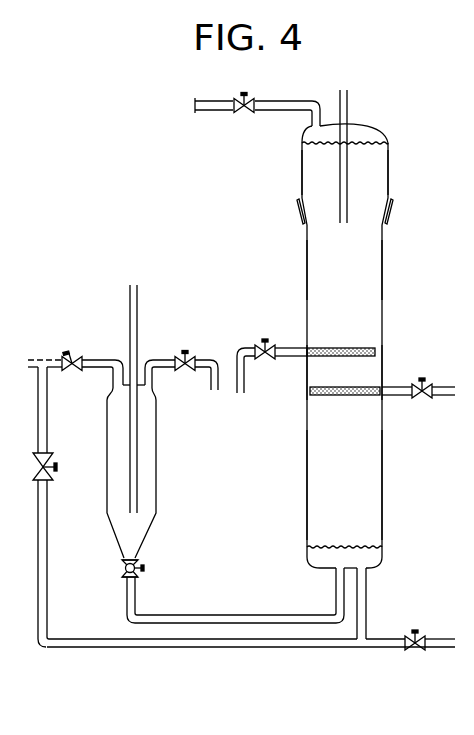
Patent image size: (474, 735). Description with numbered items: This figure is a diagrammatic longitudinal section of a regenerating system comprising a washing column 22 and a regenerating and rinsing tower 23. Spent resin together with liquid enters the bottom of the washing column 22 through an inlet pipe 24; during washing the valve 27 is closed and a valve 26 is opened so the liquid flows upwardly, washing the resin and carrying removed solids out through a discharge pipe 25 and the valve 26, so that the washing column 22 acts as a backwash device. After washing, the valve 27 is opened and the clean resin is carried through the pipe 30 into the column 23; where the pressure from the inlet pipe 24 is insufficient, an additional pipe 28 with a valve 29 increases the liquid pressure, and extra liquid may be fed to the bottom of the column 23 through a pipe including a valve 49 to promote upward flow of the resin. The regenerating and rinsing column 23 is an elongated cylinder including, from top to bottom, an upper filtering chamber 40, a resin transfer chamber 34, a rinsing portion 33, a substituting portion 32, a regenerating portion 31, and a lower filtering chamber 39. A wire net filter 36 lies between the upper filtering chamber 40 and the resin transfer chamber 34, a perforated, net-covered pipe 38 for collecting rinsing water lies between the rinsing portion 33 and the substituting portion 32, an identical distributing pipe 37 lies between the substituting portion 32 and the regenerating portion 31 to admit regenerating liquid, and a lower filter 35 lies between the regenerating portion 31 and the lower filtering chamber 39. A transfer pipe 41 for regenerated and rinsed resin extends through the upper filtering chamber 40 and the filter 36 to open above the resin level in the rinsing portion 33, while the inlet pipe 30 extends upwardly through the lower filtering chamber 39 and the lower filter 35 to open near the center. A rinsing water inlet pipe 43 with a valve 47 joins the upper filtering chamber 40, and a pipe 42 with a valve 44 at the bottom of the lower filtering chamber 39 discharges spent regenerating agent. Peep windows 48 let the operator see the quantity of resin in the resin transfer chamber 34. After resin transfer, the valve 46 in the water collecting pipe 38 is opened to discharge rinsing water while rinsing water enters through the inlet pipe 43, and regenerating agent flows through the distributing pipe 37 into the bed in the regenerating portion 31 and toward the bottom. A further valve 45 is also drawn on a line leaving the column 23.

The washing column 22 is at (157, 469).
The regenerating and rinsing tower 23 is at (381, 322).
The inlet pipe 24 is at (130, 322).
The discharge pipe 25 is at (155, 359).
The valve 26 is at (186, 353).
The valve 27 is at (145, 568).
The additional pipe 28 is at (113, 378).
The valve 29 is at (71, 352).
The pipe 30 is at (240, 614).
The regenerating portion 31 is at (306, 472).
The substituting portion 32 is at (372, 367).
The rinsing portion 33 is at (372, 291).
The resin transfer chamber 34 is at (382, 175).
The lower filter 35 is at (358, 545).
The filter 36 is at (318, 145).
The distributing pipe 37 is at (342, 396).
The pipe for collecting rinsing water 38 is at (344, 347).
The lower filtering chamber 39 is at (378, 557).
The upper filtering chamber 40 is at (376, 131).
The transfer pipe 41 is at (348, 97).
The pipe for discharging spent regenerating agent 42 is at (367, 586).
The rinsing water inlet pipe 43 is at (281, 100).
The valve 44 is at (415, 630).
The side outlet valve 45 is at (422, 380).
The valve 46 is at (265, 342).
The valve 47 is at (244, 113).
The peep windows 48 is at (389, 213).
The valve 49 is at (192, 503).